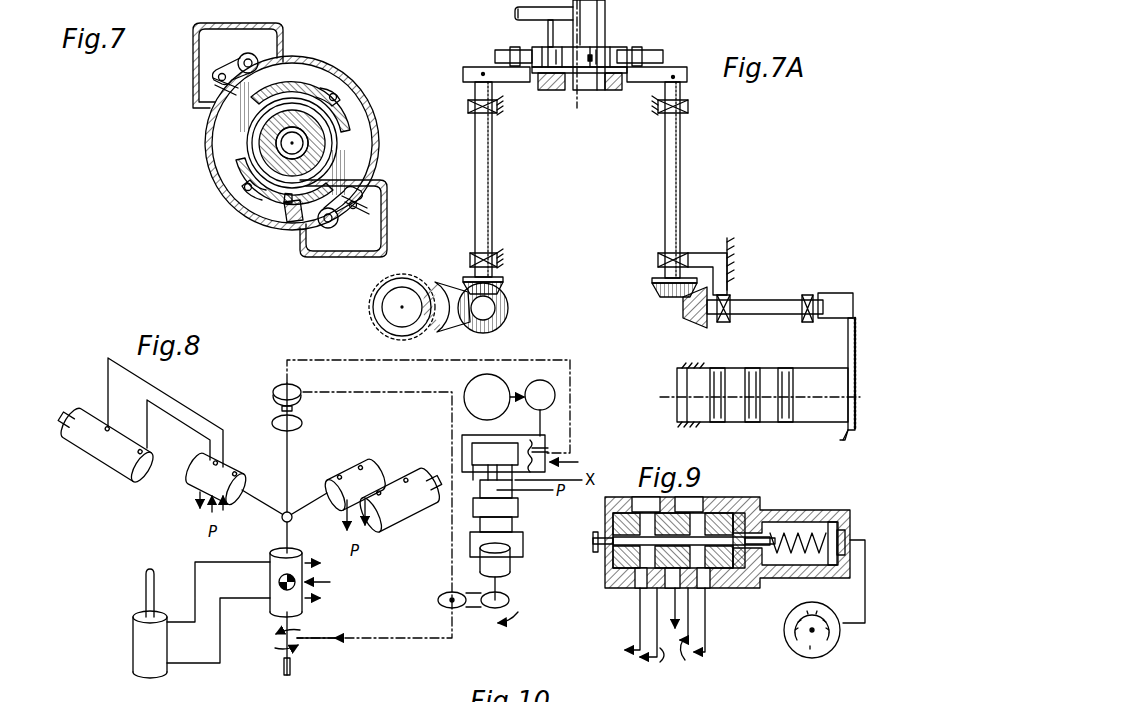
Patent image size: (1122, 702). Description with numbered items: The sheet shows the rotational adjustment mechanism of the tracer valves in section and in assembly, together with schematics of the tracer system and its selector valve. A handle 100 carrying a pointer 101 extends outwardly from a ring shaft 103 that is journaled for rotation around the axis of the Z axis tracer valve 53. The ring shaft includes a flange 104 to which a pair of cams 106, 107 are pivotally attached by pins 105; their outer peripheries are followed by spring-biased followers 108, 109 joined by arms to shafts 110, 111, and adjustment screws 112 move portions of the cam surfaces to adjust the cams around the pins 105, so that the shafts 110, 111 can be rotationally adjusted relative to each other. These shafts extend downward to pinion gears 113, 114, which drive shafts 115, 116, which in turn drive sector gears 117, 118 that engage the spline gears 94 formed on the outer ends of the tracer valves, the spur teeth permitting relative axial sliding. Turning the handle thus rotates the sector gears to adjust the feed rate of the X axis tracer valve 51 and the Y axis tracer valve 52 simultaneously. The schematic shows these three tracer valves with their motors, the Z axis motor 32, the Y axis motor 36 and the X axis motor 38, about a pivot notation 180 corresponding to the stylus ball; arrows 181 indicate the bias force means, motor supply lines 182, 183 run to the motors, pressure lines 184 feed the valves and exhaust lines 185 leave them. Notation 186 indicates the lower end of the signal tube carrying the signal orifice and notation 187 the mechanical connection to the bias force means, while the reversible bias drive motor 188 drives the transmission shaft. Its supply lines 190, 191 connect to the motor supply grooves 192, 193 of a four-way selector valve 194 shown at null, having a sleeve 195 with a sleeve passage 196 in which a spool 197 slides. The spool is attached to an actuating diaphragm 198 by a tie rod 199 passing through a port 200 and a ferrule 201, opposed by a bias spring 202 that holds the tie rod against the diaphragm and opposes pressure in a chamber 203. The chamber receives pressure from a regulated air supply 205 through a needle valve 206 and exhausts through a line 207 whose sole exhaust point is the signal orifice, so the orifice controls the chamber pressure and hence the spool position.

In FIG. 8, the Z axis motor 32 is at (201, 620).
In FIG. 8, the Y axis motor 36 is at (104, 443).
In FIG. 8, the X axis motor 38 is at (402, 499).
In FIG. 7A, the X axis tracer valve 51 is at (775, 422).
In FIG. 8, the X axis tracer valve 51 is at (355, 484).
In FIG. 7A, the Y axis tracer valve 52 is at (368, 302).
In FIG. 8, the Y axis tracer valve 52 is at (216, 478).
In FIG. 8, the Z axis tracer valve 53 is at (272, 606).
In FIG. 7A, the spline gear 94 is at (846, 438).
In FIG. 7A, the handle 100 is at (540, 22).
In FIG. 7A, the pointer 101 is at (515, 10).
In FIG. 7, the ring shaft 103 is at (340, 135).
In FIG. 7A, the ring shaft 103 is at (606, 28).
In FIG. 7A, the flange 104 is at (562, 75).
In FIG. 7, the pins 105 is at (327, 78).
In FIG. 7A, the pins 105 is at (598, 53).
In FIG. 7, the cam 106 is at (238, 108).
In FIG. 7, the cam 107 is at (301, 214).
In FIG. 7, the follower 108 is at (253, 58).
In FIG. 7A, the follower 108 is at (495, 56).
In FIG. 7, the follower 109 is at (340, 230).
In FIG. 7A, the follower 109 is at (663, 57).
In FIG. 7, the shaft 110 is at (213, 78).
In FIG. 7A, the shaft 110 is at (492, 197).
In FIG. 7, the shaft 111 is at (357, 203).
In FIG. 7A, the shaft 111 is at (680, 197).
In FIG. 7, the adjustment screws 112 is at (310, 72).
In FIG. 7A, the pinion gears 113 is at (503, 289).
In FIG. 7A, the pinion gears 114 is at (680, 303).
In FIG. 7A, the shaft 115 is at (490, 305).
In FIG. 7A, the shaft 116 is at (762, 315).
In FIG. 7A, the sector gear 117 is at (455, 280).
In FIG. 7A, the sector gear 118 is at (846, 344).
In FIG. 8, the pivot notation 180 is at (270, 582).
In FIG. 8, the arrows 181 is at (277, 650).
In FIG. 8, the motor supply lines 182 is at (195, 428).
In FIG. 8, the motor supply line 183 is at (195, 412).
In FIG. 8, the pressure lines 184 is at (212, 518).
In FIG. 8, the exhaust lines 185 is at (200, 494).
In FIG. 8, the lower end of signal tube 186 is at (283, 385).
In FIG. 8, the mechanical connection 187 is at (332, 640).
In FIG. 8, the bias drive motor 188 is at (504, 566).
In FIG. 8, the supply line 190 is at (470, 543).
In FIG. 9, the supply line 190 is at (630, 638).
In FIG. 8, the supply line 191 is at (520, 550).
In FIG. 9, the supply line 191 is at (699, 632).
In FIG. 9, the motor supply groove 192 is at (650, 580).
In FIG. 9, the motor supply groove 193 is at (688, 582).
In FIG. 8, the selector valve 194 is at (581, 465).
In FIG. 9, the selector valve 194 is at (755, 497).
In FIG. 9, the sleeve 195 is at (733, 497).
In FIG. 9, the sleeve passage 196 is at (615, 565).
In FIG. 9, the spool 197 is at (625, 520).
In FIG. 9, the actuating diaphragm 198 is at (825, 560).
In FIG. 9, the tie rod 199 is at (717, 543).
In FIG. 9, the port 200 is at (610, 545).
In FIG. 9, the ferrule 201 is at (775, 530).
In FIG. 9, the bias spring 202 is at (800, 530).
In FIG. 8, the chamber 203 is at (542, 445).
In FIG. 9, the chamber 203 is at (818, 528).
In FIG. 8, the regulated air supply 205 is at (500, 381).
In FIG. 8, the needle valve 206 is at (556, 392).
In FIG. 8, the line 207 is at (340, 360).
In FIG. 9, the line 207 is at (855, 635).